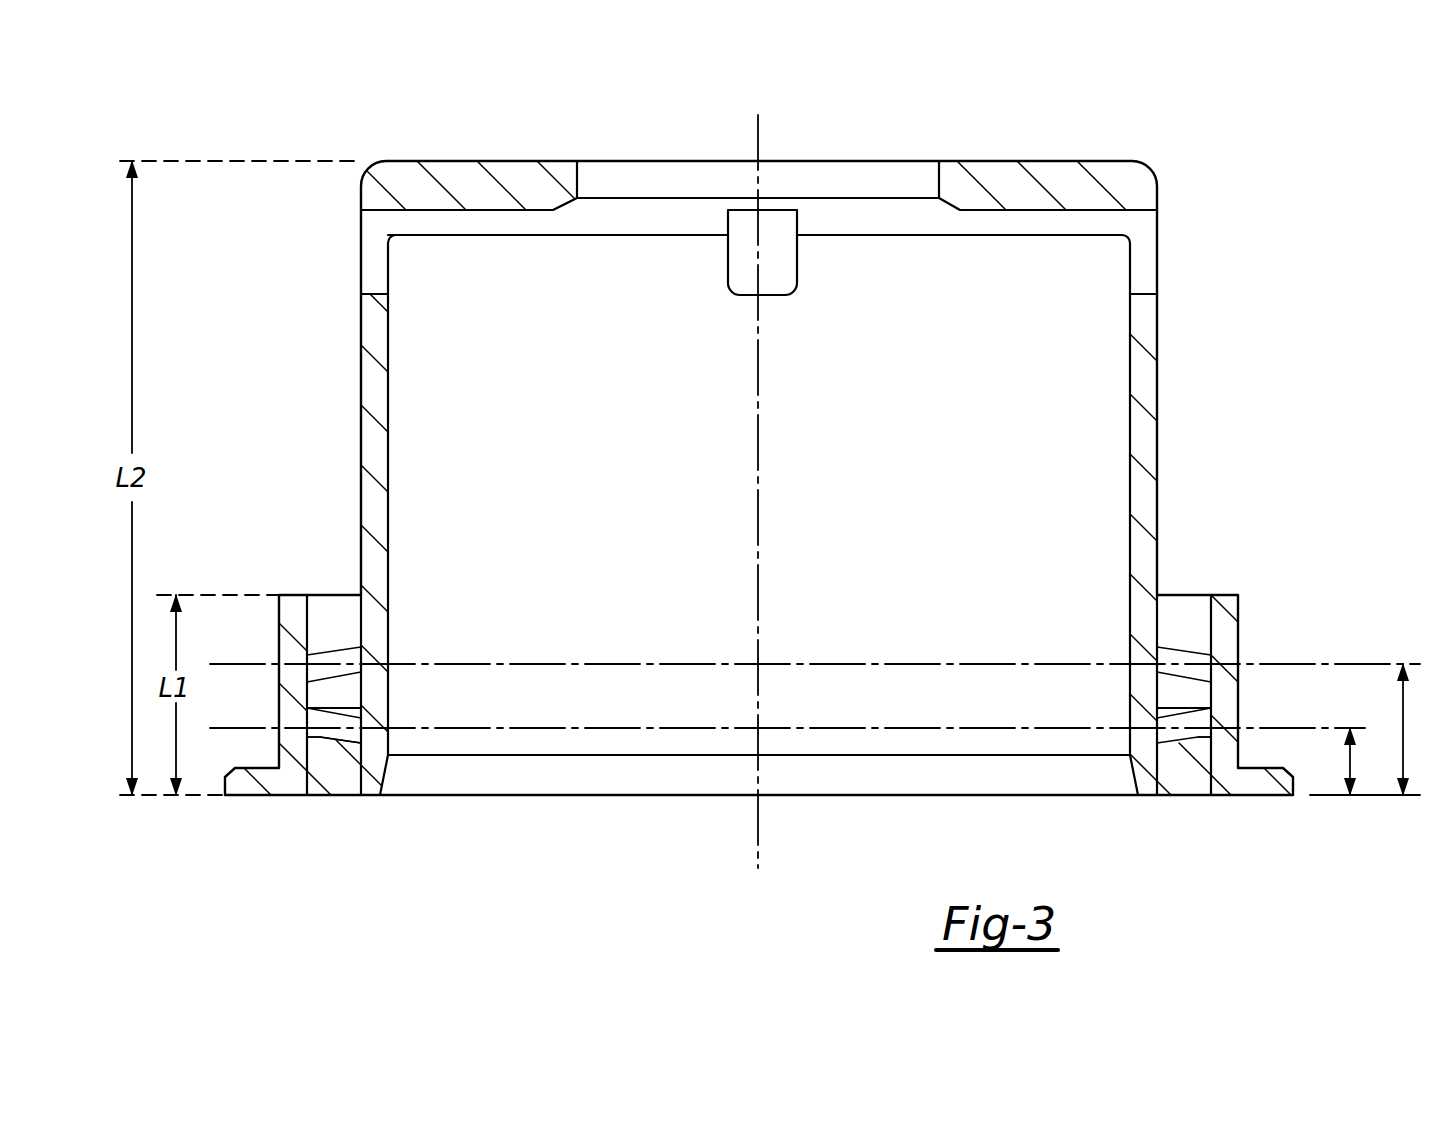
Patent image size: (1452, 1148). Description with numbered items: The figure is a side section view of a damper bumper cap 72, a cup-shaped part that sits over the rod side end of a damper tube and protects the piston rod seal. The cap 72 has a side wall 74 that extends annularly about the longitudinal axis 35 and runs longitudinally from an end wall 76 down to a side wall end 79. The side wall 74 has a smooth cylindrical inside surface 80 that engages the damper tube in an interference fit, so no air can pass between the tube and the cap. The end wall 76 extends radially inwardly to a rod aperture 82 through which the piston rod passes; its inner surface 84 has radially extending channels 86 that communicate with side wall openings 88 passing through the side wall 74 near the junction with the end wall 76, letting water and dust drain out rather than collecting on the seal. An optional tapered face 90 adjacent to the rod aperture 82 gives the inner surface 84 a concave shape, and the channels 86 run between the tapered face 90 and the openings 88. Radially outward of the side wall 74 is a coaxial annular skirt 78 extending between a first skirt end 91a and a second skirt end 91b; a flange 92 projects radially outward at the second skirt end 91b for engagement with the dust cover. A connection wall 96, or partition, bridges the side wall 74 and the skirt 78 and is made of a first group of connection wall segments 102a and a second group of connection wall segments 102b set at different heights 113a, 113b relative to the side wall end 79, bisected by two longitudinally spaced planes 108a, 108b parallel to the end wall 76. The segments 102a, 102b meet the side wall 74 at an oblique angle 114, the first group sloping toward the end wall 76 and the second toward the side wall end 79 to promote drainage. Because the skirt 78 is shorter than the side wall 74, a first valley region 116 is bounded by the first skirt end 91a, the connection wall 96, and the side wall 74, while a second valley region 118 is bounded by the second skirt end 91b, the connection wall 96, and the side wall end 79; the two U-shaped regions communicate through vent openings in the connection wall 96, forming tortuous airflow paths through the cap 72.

The damper bumper cap 72 is at (296, 116).
The side wall 74 is at (373, 450).
The end wall 76 is at (455, 175).
The annular skirt 78 is at (291, 634).
The side wall end 79 is at (369, 789).
The inside surface 80 is at (392, 524).
The rod aperture 82 is at (610, 184).
The inner surface 84 is at (499, 226).
The radially extending channels 86 is at (432, 220).
The side wall openings 88 is at (372, 275).
The tapered face 90 is at (577, 199).
The first skirt end 91a is at (293, 595).
The second skirt end 91b is at (287, 796).
The flange 92 is at (238, 788).
The connection wall 96 is at (318, 742).
The first group of connection wall segments 102a is at (347, 658).
The second group of connection wall segments 102b is at (340, 718).
The first plane 108a is at (565, 663).
The second plane 108b is at (600, 729).
The first height 113a is at (1405, 798).
The second height 113b is at (1353, 798).
The oblique angle 114 is at (356, 640).
The first valley region 116 is at (343, 607).
The second valley region 118 is at (334, 782).
The longitudinal axis 35 is at (758, 578).